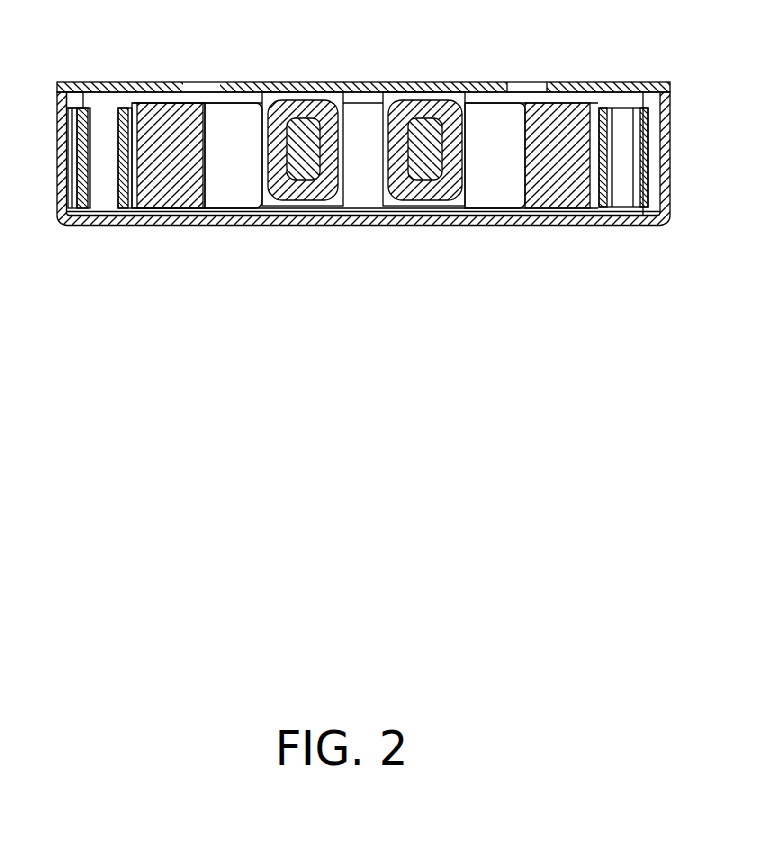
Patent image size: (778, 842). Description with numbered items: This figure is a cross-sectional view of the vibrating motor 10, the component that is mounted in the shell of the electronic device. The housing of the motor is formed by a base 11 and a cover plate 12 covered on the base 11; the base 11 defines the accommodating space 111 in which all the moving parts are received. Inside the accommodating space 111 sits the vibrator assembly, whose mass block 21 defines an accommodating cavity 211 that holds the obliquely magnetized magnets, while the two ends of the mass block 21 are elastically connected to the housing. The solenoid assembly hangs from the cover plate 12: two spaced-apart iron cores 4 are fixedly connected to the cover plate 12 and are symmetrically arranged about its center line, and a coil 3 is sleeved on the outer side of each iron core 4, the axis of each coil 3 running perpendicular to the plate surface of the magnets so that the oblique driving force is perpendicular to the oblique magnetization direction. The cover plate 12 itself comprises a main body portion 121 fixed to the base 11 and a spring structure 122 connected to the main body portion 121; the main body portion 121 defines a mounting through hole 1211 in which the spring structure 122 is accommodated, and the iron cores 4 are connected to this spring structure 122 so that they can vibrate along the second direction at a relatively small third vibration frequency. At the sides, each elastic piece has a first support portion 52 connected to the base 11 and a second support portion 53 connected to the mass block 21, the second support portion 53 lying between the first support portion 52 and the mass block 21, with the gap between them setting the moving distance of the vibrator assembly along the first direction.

The vibrating motor 10 is at (363, 156).
The base 11 is at (363, 156).
The accommodating space 111 is at (232, 100).
The cover plate 12 is at (363, 111).
The main body portion 121 is at (640, 88).
The mounting through hole 1211 is at (528, 85).
The spring structure 122 is at (363, 85).
The mass block 21 is at (557, 197).
The accommodating cavity 211 is at (368, 192).
The coil 3 is at (290, 195).
The iron core 4 is at (425, 180).
The first support portion 52 is at (80, 200).
The second support portion 53 is at (127, 200).